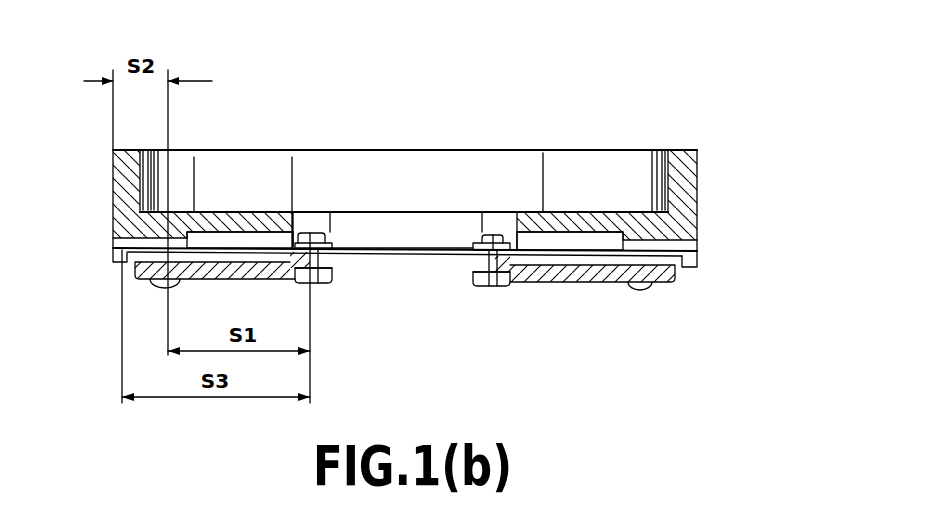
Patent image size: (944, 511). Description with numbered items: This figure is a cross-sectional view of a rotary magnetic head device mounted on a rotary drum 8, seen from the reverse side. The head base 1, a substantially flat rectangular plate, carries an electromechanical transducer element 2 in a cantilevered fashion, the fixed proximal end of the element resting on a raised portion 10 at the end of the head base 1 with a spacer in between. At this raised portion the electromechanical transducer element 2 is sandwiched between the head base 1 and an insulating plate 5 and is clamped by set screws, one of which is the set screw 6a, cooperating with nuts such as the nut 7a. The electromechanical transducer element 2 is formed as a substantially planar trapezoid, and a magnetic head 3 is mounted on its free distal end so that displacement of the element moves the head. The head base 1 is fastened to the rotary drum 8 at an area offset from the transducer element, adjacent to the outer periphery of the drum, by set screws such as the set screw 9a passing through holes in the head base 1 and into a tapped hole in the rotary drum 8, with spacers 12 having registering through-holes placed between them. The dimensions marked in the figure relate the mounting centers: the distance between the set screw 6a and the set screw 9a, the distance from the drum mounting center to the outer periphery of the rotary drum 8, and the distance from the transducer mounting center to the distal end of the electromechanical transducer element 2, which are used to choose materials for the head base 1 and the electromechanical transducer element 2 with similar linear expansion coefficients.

The head base 1 is at (226, 281).
The electromechanical transducer element 2 is at (272, 248).
The magnetic head 3 is at (117, 260).
The insulating plate 5 is at (335, 242).
The set screw 6a is at (313, 232).
The nut 7a is at (335, 284).
The rotary drum 8 is at (214, 211).
The set screw 9a is at (152, 288).
The raised portion 10 is at (334, 266).
The spacer 12 is at (113, 240).